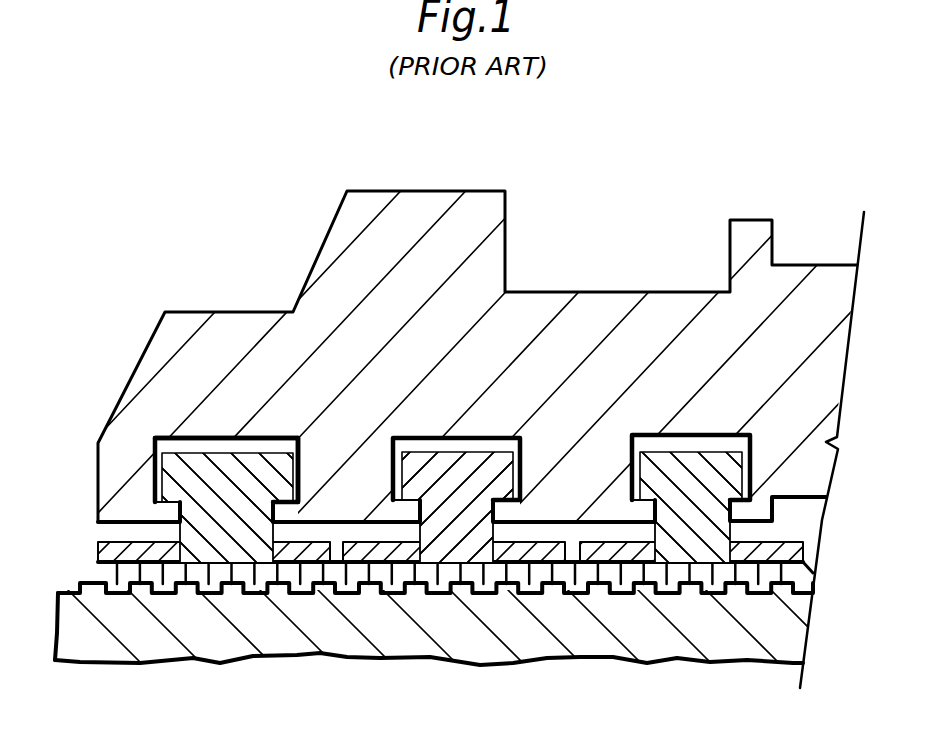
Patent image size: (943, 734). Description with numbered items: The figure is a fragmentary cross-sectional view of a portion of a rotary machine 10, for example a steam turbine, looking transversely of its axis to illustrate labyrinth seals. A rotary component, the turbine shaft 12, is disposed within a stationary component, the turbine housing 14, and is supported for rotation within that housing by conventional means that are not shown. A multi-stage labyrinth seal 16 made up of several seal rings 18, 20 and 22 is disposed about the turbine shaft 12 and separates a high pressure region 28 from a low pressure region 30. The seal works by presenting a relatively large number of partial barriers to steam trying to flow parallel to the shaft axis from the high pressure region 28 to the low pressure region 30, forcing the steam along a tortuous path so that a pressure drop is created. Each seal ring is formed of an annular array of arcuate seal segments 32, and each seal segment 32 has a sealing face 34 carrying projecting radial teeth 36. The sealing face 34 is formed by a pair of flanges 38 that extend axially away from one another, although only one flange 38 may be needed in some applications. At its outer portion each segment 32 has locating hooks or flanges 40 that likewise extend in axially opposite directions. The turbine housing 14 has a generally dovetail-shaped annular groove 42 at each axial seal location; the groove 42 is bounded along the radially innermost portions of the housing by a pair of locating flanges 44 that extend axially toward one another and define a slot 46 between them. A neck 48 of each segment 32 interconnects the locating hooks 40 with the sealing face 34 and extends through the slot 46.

The rotary machine 10 is at (119, 312).
The turbine shaft 12 is at (137, 645).
The turbine housing 14 is at (300, 315).
The multi-stage labyrinth seal 16 is at (449, 637).
The seal ring 18 is at (228, 474).
The seal ring 20 is at (443, 468).
The seal ring 22 is at (665, 460).
The high pressure region 28 is at (65, 547).
The low pressure region 30 is at (808, 520).
The arcuate seal segment 32 is at (190, 485).
The sealing face 34 is at (267, 565).
The radial teeth 36 is at (115, 572).
The flange 38 is at (814, 580).
The locating hook 40 is at (293, 467).
The annular groove 42 is at (213, 440).
The locating flange 44 is at (162, 513).
The slot 46 is at (412, 530).
The neck 48 is at (463, 505).